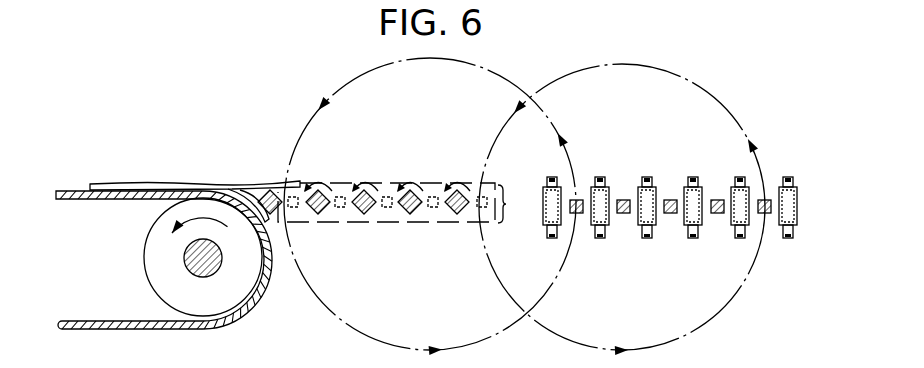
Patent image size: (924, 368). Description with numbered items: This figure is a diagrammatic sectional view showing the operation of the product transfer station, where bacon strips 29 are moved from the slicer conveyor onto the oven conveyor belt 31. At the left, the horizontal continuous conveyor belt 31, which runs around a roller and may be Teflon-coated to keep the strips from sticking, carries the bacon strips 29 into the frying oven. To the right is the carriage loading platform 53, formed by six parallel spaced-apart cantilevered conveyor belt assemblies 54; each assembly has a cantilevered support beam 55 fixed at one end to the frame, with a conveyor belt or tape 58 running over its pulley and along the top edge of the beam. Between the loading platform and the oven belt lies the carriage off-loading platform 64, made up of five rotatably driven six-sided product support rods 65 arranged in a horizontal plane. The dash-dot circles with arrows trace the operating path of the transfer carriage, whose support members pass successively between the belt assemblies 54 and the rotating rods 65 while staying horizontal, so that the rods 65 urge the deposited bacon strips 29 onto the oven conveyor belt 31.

The bacon strips 29 is at (232, 186).
The conveyor belt 31 is at (117, 200).
The carriage loading platform 53 is at (695, 211).
The cantilevered conveyor belt assemblies 54 is at (694, 239).
The cantilevered support beam 55 is at (613, 193).
The conveyor belt or tape 58 is at (552, 177).
The carriage off-loading platform 64 is at (397, 195).
The product support rods 65 is at (403, 211).